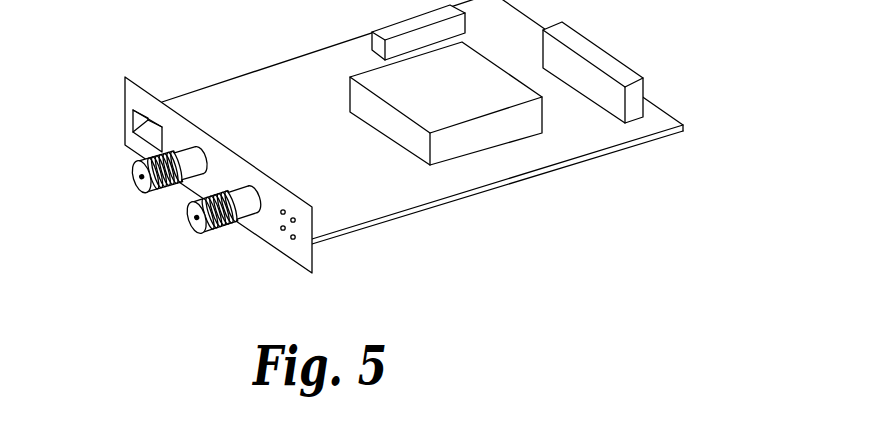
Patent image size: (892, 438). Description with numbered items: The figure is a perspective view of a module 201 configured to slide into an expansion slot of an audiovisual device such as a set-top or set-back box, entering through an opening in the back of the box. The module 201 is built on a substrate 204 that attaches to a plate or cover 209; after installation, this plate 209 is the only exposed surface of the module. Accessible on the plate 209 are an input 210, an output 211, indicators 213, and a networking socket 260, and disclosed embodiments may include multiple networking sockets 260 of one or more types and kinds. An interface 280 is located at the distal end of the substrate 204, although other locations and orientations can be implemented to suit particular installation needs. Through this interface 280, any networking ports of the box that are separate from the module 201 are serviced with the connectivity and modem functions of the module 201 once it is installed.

The module 201 is at (398, 163).
The substrate 204 is at (273, 82).
The plate or cover 209 is at (253, 202).
The input 210 is at (196, 218).
The output 211 is at (140, 178).
The indicators 213 is at (307, 232).
The networking socket 260 is at (143, 123).
The interface 280 is at (595, 57).